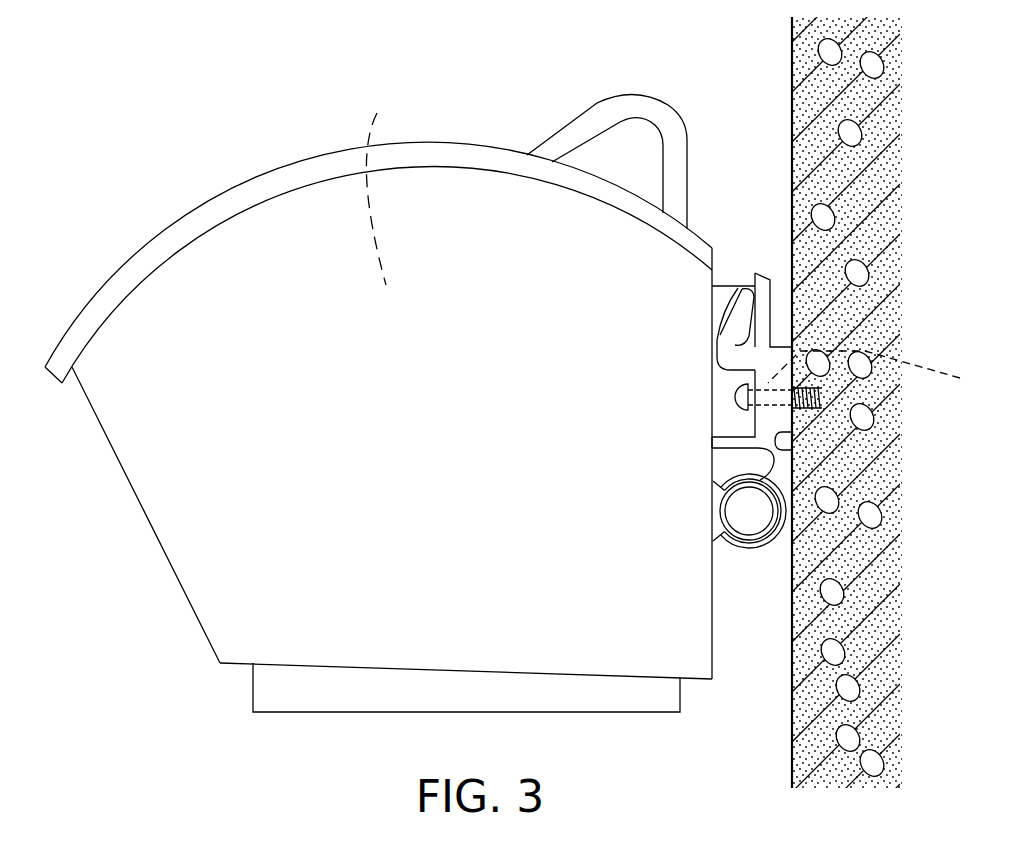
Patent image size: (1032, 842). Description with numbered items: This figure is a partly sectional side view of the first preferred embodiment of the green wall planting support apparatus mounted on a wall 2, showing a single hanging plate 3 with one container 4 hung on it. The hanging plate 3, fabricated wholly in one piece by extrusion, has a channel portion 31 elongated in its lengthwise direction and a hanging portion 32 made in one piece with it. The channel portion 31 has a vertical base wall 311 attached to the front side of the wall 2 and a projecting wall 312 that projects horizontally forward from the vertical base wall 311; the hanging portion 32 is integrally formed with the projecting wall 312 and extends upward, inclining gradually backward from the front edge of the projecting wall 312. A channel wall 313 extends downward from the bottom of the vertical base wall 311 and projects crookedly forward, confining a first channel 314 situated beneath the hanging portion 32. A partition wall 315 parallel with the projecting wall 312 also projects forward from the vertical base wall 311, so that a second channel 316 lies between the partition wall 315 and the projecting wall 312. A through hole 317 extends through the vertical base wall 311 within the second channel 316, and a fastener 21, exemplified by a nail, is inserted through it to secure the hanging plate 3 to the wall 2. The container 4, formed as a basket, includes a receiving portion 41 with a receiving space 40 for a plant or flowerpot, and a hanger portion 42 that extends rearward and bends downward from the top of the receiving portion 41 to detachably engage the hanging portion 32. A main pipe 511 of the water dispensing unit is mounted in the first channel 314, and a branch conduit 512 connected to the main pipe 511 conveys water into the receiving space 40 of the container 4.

The wall 2 is at (870, 670).
The hanging plate 3 is at (706, 332).
The container 4 is at (298, 143).
The fastener 21 is at (822, 385).
The channel portion 31 is at (749, 568).
The hanging portion 32 is at (742, 310).
The receiving space 40 is at (379, 178).
The receiving portion 41 is at (188, 518).
The hanger portion 42 is at (765, 322).
The vertical base wall 311 is at (783, 418).
The projecting wall 312 is at (738, 358).
The channel wall 313 is at (765, 530).
The first channel 314 is at (790, 510).
The partition wall 315 is at (712, 445).
The second channel 316 is at (725, 413).
The through hole 317 is at (889, 373).
The main pipe 511 is at (713, 523).
The branch conduit 512 is at (567, 137).